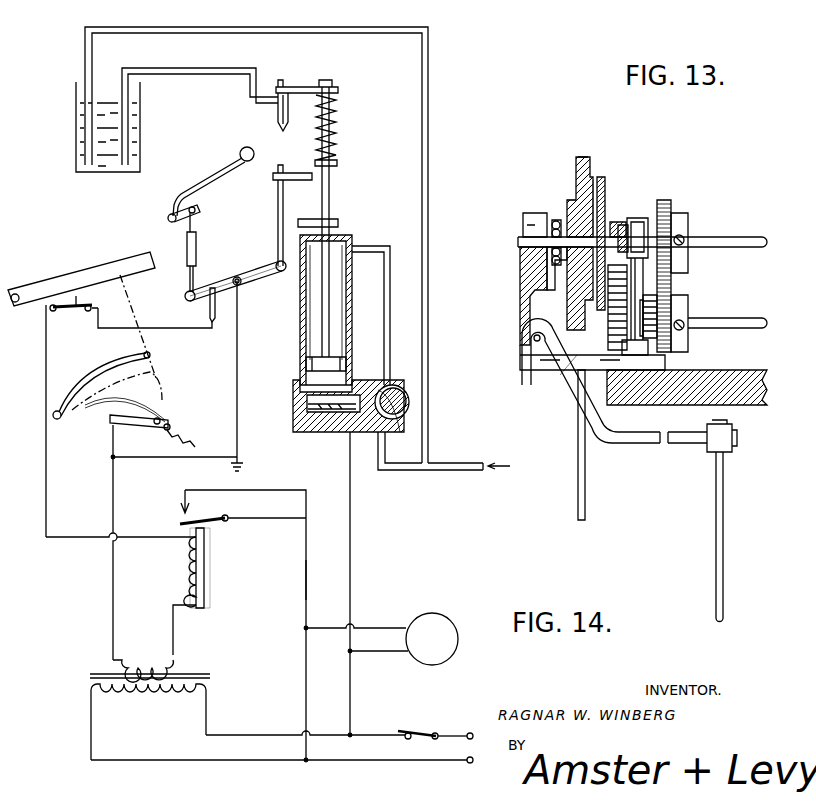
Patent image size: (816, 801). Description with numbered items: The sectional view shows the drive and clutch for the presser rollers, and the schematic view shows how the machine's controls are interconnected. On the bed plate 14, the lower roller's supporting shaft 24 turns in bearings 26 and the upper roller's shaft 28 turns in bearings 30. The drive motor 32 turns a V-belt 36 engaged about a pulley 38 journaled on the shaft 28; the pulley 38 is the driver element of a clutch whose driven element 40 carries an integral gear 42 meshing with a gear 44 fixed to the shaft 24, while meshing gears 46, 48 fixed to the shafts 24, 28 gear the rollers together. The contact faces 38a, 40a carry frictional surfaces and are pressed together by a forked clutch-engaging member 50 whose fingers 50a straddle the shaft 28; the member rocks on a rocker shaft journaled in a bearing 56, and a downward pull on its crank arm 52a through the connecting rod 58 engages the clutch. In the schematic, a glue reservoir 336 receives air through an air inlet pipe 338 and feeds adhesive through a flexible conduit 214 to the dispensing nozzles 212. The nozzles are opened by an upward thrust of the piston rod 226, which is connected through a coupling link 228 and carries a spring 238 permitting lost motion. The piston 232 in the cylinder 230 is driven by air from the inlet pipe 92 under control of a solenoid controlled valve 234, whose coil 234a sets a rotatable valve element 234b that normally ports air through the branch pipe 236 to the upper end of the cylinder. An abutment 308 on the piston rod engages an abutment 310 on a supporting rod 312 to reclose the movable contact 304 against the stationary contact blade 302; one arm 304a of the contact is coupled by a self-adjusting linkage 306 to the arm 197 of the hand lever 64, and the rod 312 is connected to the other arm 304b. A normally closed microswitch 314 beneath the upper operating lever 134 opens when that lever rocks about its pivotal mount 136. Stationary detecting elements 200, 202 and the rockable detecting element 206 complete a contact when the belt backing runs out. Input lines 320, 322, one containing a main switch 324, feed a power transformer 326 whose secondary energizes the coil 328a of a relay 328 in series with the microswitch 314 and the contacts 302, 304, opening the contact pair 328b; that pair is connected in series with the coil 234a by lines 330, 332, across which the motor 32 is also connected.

In FIG. 14, the glue reservoir 336 is at (76, 130).
In FIG. 14, the air inlet pipe 338 is at (228, 27).
In FIG. 14, the flexible conduit 214 is at (205, 68).
In FIG. 14, the dispensing nozzles 212 is at (278, 113).
In FIG. 14, the air-operated actuating mechanism 228 is at (306, 87).
In FIG. 14, the spring 238 is at (337, 130).
In FIG. 14, the piston rod 226 is at (330, 185).
In FIG. 14, the abutment 308 is at (320, 220).
In FIG. 14, the further abutment 310 is at (298, 173).
In FIG. 14, the supporting rod 312 is at (278, 193).
In FIG. 14, the cylinder 230 is at (300, 332).
In FIG. 14, the piston 232 is at (345, 360).
In FIG. 14, the branch pipe 236 is at (388, 287).
In FIG. 14, the solenoid controlled valve 234 is at (284, 399).
In FIG. 14, the solenoid coil 234a is at (328, 432).
In FIG. 14, the rotatable valve element 234b is at (400, 415).
In FIG. 14, the air inlet pipe 92 is at (400, 472).
In FIG. 14, the hand lever 64 is at (208, 177).
In FIG. 14, the arm 197 is at (185, 205).
In FIG. 14, the self-adjusting linkage 306 is at (187, 245).
In FIG. 14, the movable contact 304 is at (233, 258).
In FIG. 14, the arm of movable contact 304a is at (220, 280).
In FIG. 14, the arm of movable contact 304b is at (265, 275).
In FIG. 14, the stationary contact blade 302 is at (210, 312).
In FIG. 14, the upper operating lever 134 is at (92, 272).
In FIG. 14, the pivotal mount 136 is at (15, 290).
In FIG. 14, the microswitch 314 is at (78, 312).
In FIG. 14, the detecting element 206 is at (112, 400).
In FIG. 14, the stationary detecting element 200 is at (157, 425).
In FIG. 14, the stationary detecting element 202 is at (168, 431).
In FIG. 14, the contact pair 328b is at (205, 521).
In FIG. 14, the energization coil 328a is at (205, 557).
In FIG. 14, the relay 328 is at (218, 589).
In FIG. 14, the power transformer 326 is at (90, 680).
In FIG. 14, the line 330 is at (351, 557).
In FIG. 14, the line 332 is at (306, 580).
In FIG. 14, the drive motor 32 is at (440, 622).
In FIG. 14, the input line 320 is at (371, 734).
In FIG. 14, the main switch 324 is at (420, 733).
In FIG. 14, the input line 322 is at (400, 762).
In FIG. 13, the shaft 28 is at (728, 237).
In FIG. 13, the supporting shaft 24 is at (738, 318).
In FIG. 13, the gear 48 is at (667, 200).
In FIG. 13, the pulley 38 is at (576, 165).
In FIG. 13, the V-belt 36 is at (583, 157).
In FIG. 13, the driven element 40 is at (601, 177).
In FIG. 13, the contact face 40a is at (605, 200).
In FIG. 13, the contact face 38a is at (575, 188).
In FIG. 13, the finger 50a is at (528, 213).
In FIG. 13, the clutch-engaging member 50 is at (520, 272).
In FIG. 13, the integral gear 42 is at (618, 222).
In FIG. 13, the bearings 30 is at (638, 218).
In FIG. 13, the gear 44 is at (622, 356).
In FIG. 13, the gear 46 is at (662, 296).
In FIG. 13, the bearings 26 is at (648, 313).
In FIG. 13, the bed plate 14 is at (735, 370).
In FIG. 13, the bearing 56 is at (522, 349).
In FIG. 13, the crank arm 52a is at (577, 360).
In FIG. 13, the connecting rod 58 is at (722, 600).